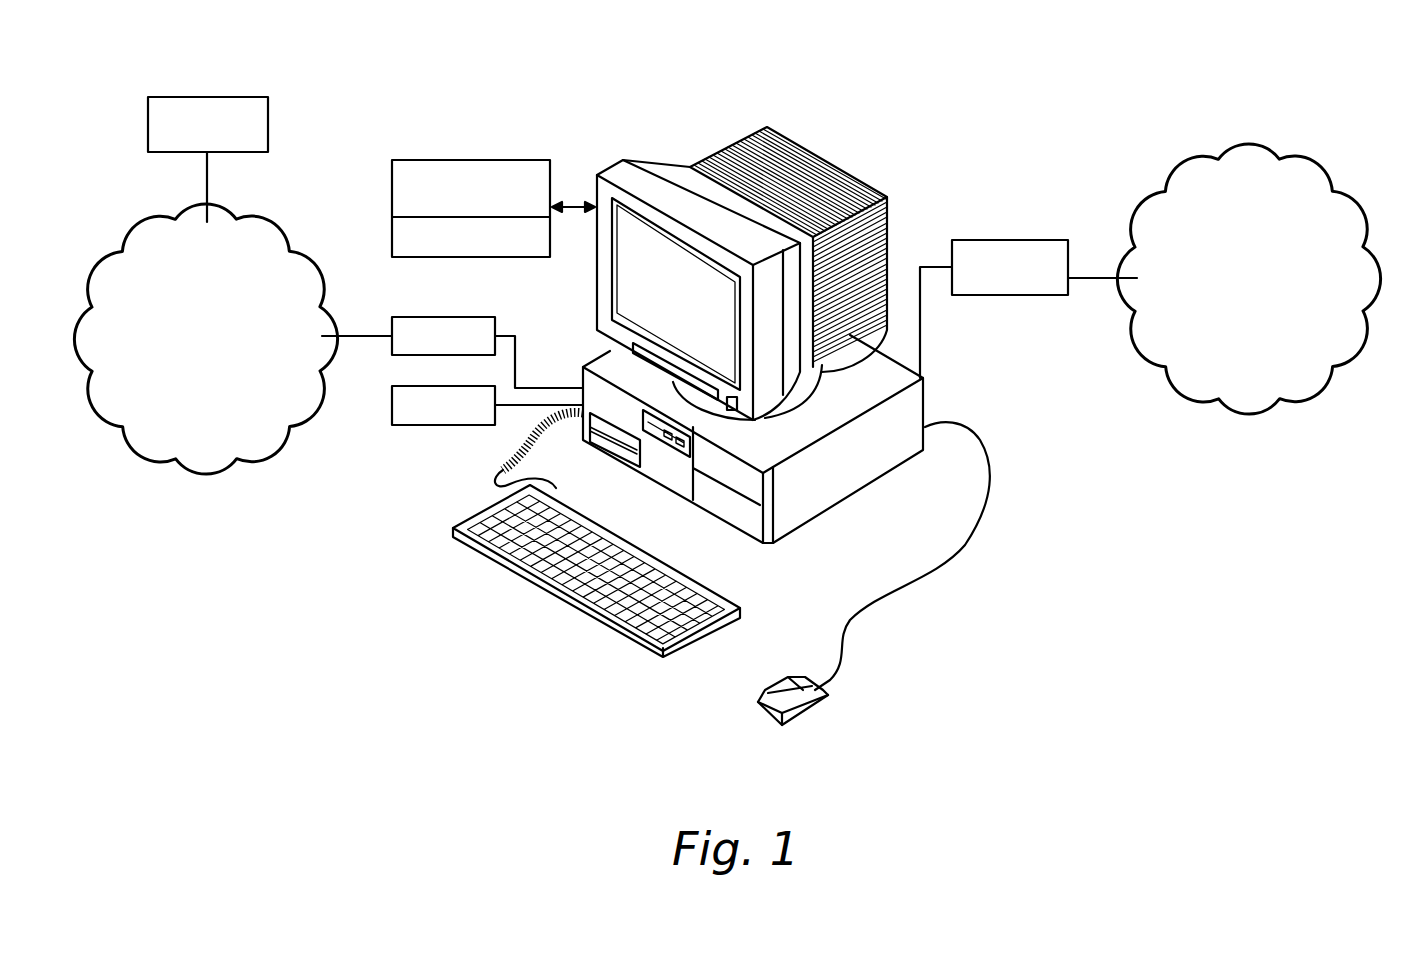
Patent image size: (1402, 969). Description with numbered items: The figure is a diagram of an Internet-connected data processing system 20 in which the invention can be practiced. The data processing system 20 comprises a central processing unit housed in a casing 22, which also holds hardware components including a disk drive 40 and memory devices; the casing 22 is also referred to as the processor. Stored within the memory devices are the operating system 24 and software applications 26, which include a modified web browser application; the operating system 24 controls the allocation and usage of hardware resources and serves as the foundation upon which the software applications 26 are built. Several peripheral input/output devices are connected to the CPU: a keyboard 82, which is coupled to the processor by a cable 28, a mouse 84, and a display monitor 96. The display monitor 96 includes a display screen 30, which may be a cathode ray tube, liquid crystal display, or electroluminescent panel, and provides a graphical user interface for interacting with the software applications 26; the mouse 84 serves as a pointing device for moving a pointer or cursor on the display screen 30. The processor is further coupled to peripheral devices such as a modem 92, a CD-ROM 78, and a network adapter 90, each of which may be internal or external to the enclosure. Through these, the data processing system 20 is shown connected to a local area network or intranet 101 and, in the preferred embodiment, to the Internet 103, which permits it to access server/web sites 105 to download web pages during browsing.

The data processing system 20 is at (995, 176).
The casing 22 is at (753, 459).
The operating system 24 is at (421, 257).
The software applications 26 is at (430, 129).
The cable 28 is at (517, 448).
The display screen 30 is at (695, 307).
The disk drive 40 is at (663, 443).
The CD-ROM 78 is at (419, 425).
The keyboard 82 is at (582, 606).
The mouse 84 is at (820, 706).
The network adapter 90 is at (1043, 240).
The modem 92 is at (406, 355).
The display monitor 96 is at (742, 256).
The intranet network 101 is at (1319, 170).
The Internet 103 is at (273, 231).
The server/web sites 105 is at (186, 63).